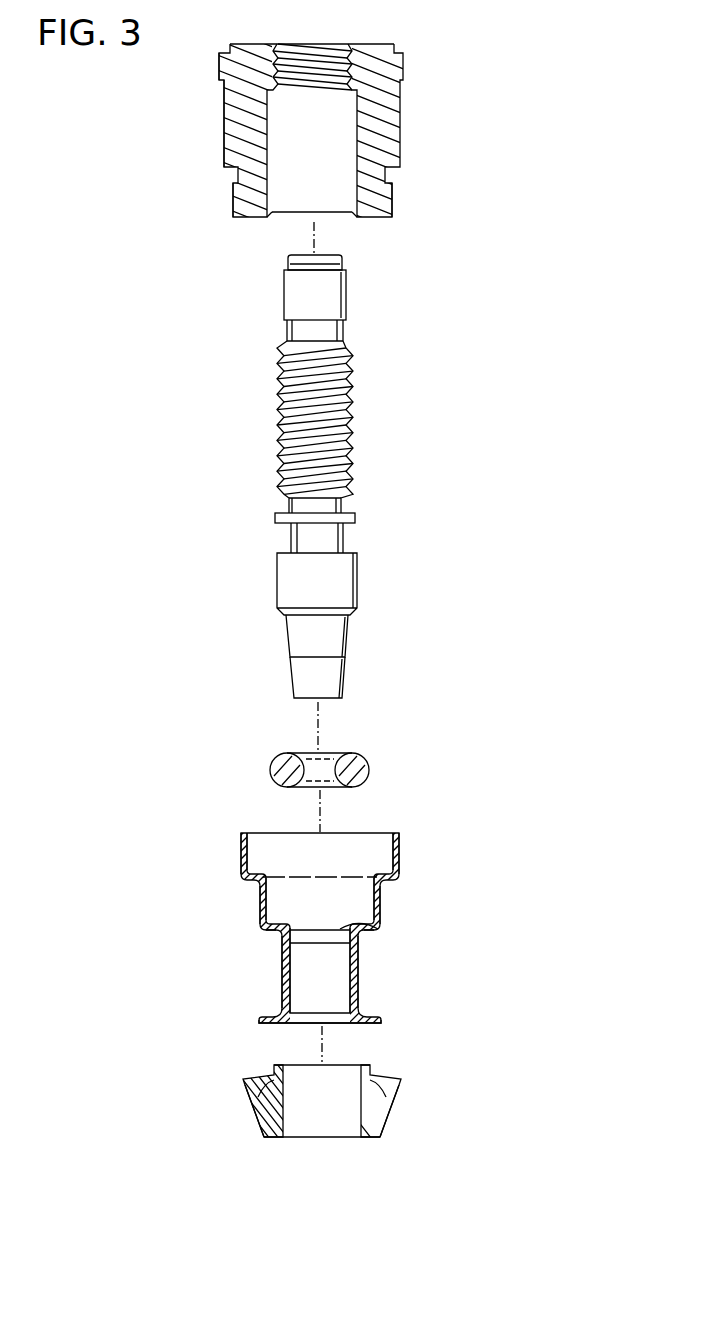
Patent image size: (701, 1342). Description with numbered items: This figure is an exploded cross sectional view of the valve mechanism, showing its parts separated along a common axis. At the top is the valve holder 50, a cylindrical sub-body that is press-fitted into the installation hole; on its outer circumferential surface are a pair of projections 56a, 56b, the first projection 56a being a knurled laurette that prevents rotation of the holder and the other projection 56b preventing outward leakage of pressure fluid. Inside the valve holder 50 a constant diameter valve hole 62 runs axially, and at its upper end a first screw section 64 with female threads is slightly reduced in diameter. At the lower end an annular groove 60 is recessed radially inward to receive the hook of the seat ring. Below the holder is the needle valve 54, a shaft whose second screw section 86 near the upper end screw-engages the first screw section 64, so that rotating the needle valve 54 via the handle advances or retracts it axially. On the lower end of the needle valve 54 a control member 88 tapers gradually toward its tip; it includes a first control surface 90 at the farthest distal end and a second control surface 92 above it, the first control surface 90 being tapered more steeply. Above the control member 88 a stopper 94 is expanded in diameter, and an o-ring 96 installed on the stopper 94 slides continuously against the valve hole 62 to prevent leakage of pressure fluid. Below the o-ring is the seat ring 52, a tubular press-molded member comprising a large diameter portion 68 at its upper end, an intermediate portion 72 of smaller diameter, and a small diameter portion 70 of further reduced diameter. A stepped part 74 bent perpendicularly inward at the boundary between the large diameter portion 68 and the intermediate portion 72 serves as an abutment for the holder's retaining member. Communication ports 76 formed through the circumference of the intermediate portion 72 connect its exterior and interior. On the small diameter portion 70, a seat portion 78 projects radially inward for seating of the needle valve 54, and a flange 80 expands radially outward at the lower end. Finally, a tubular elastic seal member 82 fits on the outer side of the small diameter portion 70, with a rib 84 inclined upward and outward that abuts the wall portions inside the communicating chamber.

The valve holder 50 is at (321, 147).
The seat ring 52 is at (330, 928).
The needle valve 54 is at (325, 488).
The first projection 56a is at (186, 71).
The second projection 56b is at (188, 123).
The annular groove 60 is at (343, 191).
The valve hole 62 is at (312, 182).
The first screw section 64 is at (312, 53).
The large diameter portion 68 is at (294, 853).
The small diameter portion 70 is at (291, 970).
The intermediate portion 72 is at (290, 934).
The stepped part 74 is at (360, 899).
The communication ports 76 is at (293, 905).
The seat portion 78 is at (397, 934).
The flange 80 is at (342, 1035).
The seal member 82 is at (328, 1153).
The rib 84 is at (348, 1111).
The second screw section 86 is at (289, 427).
The control member 88 is at (326, 622).
The first control surface 90 is at (354, 677).
The second control surface 92 is at (352, 636).
The stopper 94 is at (347, 584).
The o-ring 96 is at (344, 770).